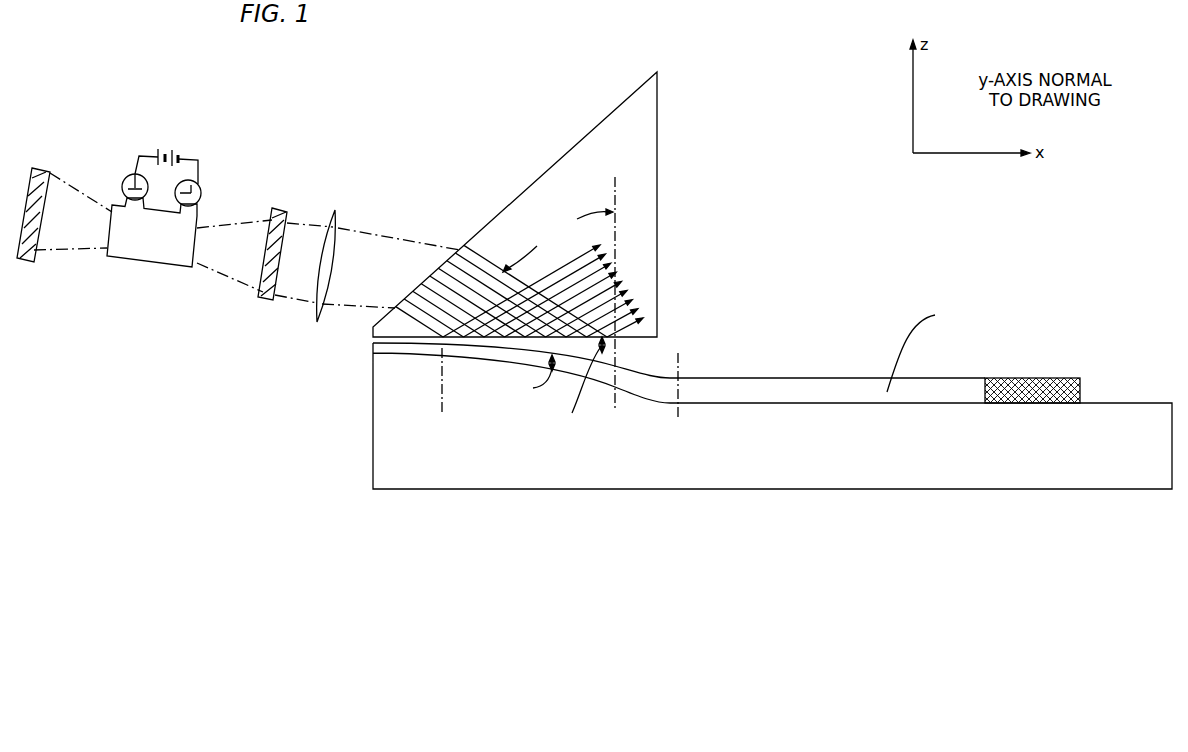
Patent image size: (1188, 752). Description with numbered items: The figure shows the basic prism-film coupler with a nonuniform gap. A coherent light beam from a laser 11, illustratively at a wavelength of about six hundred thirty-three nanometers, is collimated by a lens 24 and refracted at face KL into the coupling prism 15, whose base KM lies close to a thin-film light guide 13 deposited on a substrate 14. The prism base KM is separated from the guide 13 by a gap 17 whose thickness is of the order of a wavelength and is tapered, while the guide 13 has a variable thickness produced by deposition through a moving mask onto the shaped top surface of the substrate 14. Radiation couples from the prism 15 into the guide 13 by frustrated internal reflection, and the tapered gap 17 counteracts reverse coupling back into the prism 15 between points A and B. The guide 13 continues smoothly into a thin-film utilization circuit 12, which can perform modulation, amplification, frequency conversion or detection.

The laser 11 is at (153, 294).
The lens 24 is at (338, 220).
The coupling prism 15 is at (640, 122).
The gap 17 is at (655, 355).
The substrate 14 is at (385, 425).
The thin-film light guide 13 is at (962, 391).
The thin-film utilization circuit 12 is at (1080, 388).